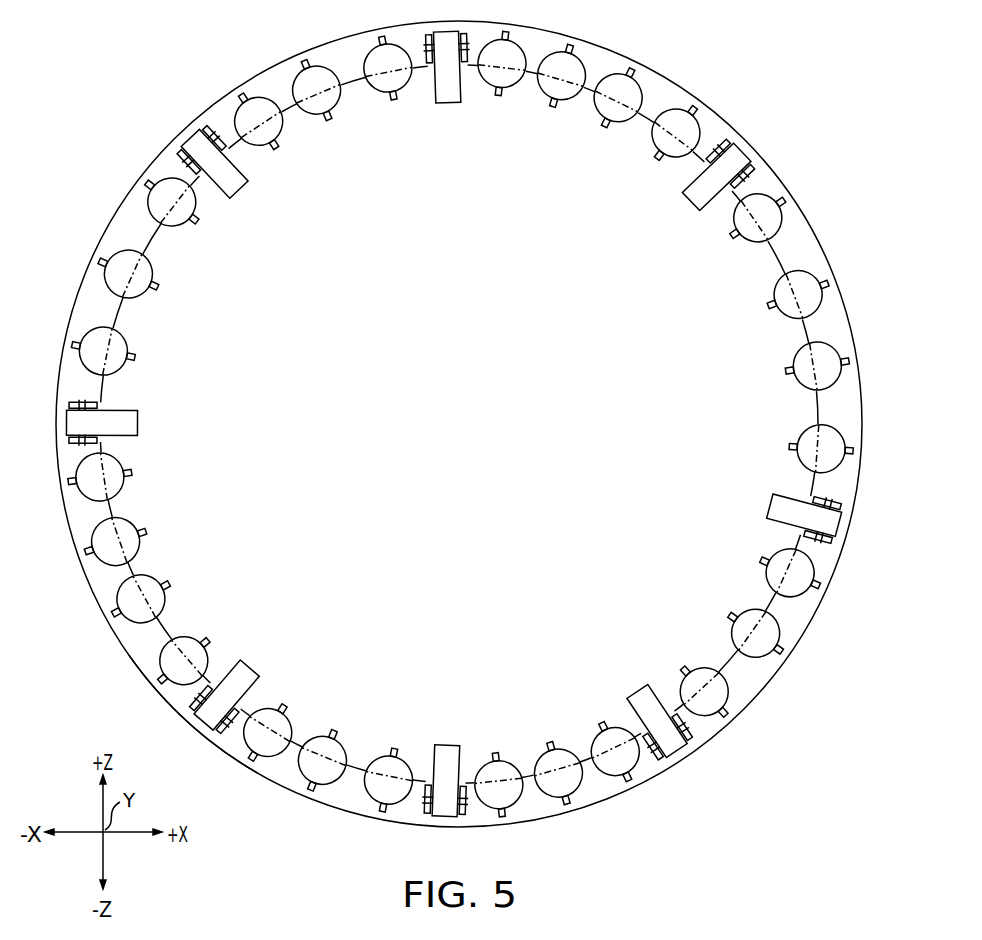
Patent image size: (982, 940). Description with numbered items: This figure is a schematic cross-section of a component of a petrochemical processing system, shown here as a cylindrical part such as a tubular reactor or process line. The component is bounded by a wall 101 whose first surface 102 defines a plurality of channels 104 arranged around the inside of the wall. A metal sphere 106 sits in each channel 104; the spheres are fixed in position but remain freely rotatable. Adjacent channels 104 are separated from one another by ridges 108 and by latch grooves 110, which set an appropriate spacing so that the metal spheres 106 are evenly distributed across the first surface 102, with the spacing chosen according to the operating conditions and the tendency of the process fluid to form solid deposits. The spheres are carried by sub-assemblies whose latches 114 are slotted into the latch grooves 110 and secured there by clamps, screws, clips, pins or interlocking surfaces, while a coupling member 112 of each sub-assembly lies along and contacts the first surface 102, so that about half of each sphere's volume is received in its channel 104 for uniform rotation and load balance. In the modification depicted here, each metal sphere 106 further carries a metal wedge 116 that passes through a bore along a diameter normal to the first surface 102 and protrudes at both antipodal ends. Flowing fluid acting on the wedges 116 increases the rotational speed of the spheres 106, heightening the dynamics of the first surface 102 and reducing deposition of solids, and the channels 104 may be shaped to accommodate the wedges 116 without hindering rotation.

The wall 101 is at (803, 241).
The first surface 102 is at (783, 290).
The channels 104 is at (758, 662).
The metal spheres 106 is at (770, 632).
The ridges 108 is at (815, 408).
The latch grooves 110 is at (202, 732).
The coupling member 112 is at (820, 457).
The latches 114 is at (243, 677).
The metal wedges 116 is at (628, 780).